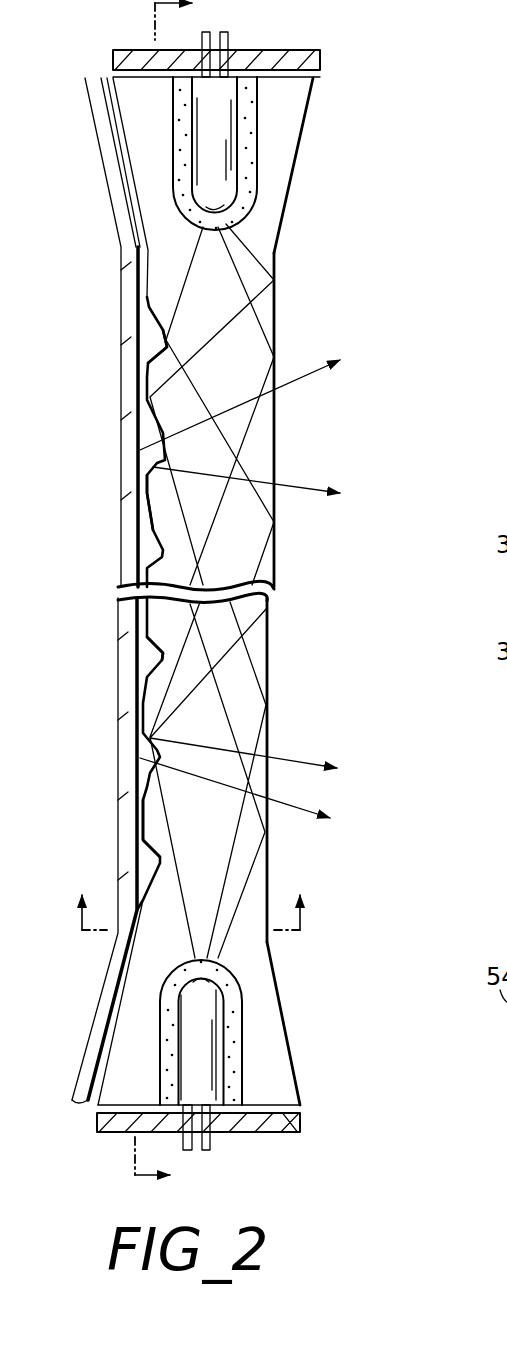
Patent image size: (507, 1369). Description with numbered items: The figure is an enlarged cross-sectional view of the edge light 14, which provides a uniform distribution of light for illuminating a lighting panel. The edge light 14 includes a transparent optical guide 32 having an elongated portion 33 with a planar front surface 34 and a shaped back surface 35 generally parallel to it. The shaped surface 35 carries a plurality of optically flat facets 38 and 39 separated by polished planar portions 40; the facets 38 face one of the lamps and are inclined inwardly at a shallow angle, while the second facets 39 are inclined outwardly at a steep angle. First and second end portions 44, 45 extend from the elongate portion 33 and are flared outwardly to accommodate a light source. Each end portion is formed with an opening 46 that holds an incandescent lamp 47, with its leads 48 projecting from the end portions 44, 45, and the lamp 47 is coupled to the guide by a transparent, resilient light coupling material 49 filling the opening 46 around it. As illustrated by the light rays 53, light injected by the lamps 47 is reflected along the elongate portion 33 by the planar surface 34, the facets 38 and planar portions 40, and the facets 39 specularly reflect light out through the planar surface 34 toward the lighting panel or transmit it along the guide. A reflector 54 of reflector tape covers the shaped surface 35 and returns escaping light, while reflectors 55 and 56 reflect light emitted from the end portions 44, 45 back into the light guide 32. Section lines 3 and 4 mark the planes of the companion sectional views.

The section line 3- 3 is at (152, 593).
The section line 4- 4 is at (187, 912).
The edge light 14 is at (318, 283).
The optical guide 32 is at (272, 728).
The elongated portion 33 is at (262, 565).
The planar front surface 34 is at (275, 445).
The shaped back surface 35 is at (146, 279).
The facets 38 is at (157, 317).
The second facets 39 is at (150, 358).
The planar portions 40 is at (147, 492).
The first end portion 44 is at (272, 1077).
The second end portion 45 is at (287, 117).
The opening 46 is at (163, 1053).
The incandescent lamp 47 is at (207, 124).
The leads 48 is at (208, 1147).
The light coupling material 49 is at (170, 1000).
The light rays 53 is at (255, 632).
The reflector 54 is at (82, 1103).
The reflector 55 is at (295, 1130).
The reflector 56 is at (262, 58).